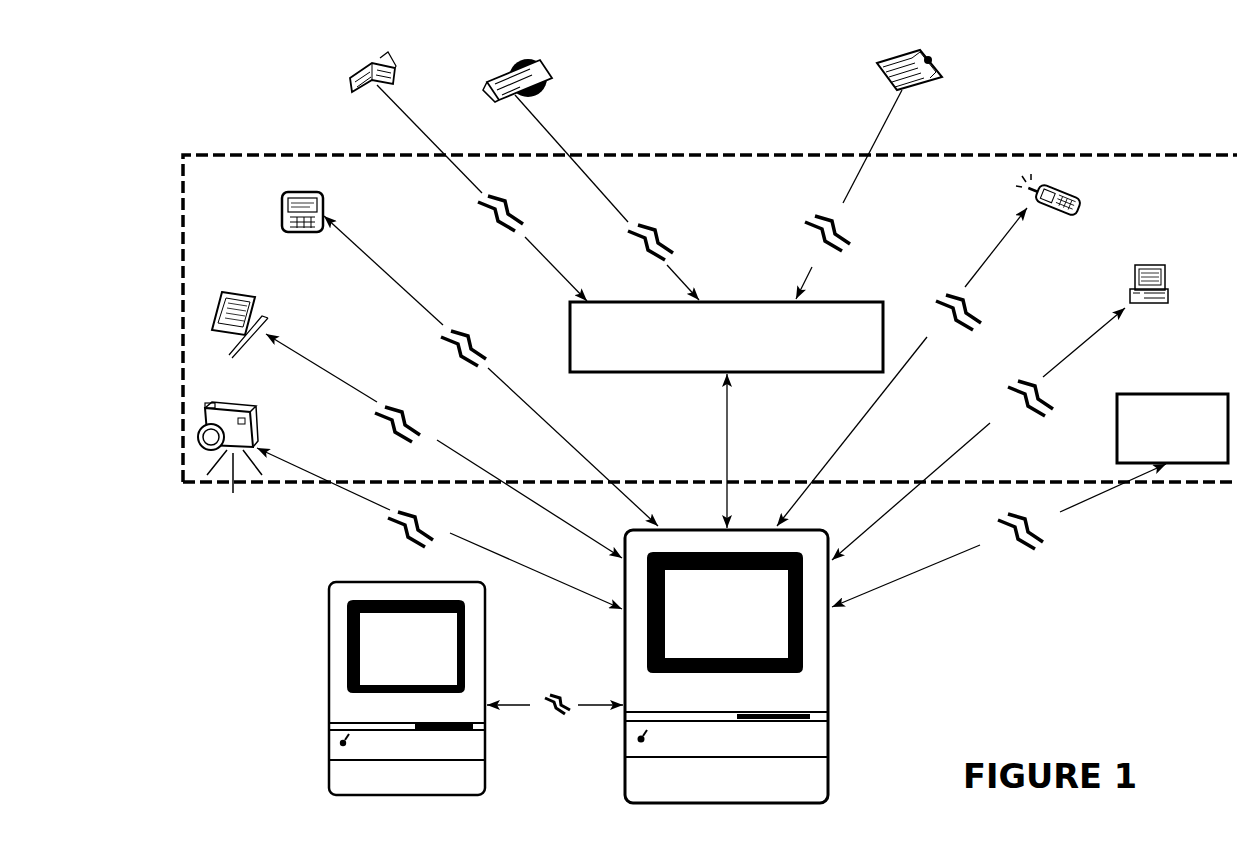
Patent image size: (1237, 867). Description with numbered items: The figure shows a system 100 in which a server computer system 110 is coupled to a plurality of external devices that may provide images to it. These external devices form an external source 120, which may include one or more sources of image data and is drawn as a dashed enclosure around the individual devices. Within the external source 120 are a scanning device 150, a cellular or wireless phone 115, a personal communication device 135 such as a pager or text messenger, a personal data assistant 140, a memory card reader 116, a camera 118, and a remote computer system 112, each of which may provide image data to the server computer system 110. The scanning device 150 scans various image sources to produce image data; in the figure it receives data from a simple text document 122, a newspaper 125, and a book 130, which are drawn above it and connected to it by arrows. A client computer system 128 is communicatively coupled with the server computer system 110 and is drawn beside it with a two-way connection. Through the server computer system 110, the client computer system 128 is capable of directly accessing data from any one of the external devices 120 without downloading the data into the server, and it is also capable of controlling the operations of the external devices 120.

The system 100 is at (255, 692).
The server computer system 110 is at (828, 693).
The remote computer system 112 is at (1128, 297).
The cellular or wireless phone 115 is at (1080, 205).
The memory card reader 116 is at (1137, 394).
The camera 118 is at (223, 403).
The external source 120 is at (1218, 485).
The simple text document 122 is at (938, 62).
The newspaper 125 is at (540, 63).
The client computer system 128 is at (328, 617).
The book 130 is at (362, 93).
The personal communication device 135 is at (303, 237).
The personal data assistant 140 is at (253, 307).
The scanning device 150 is at (659, 372).